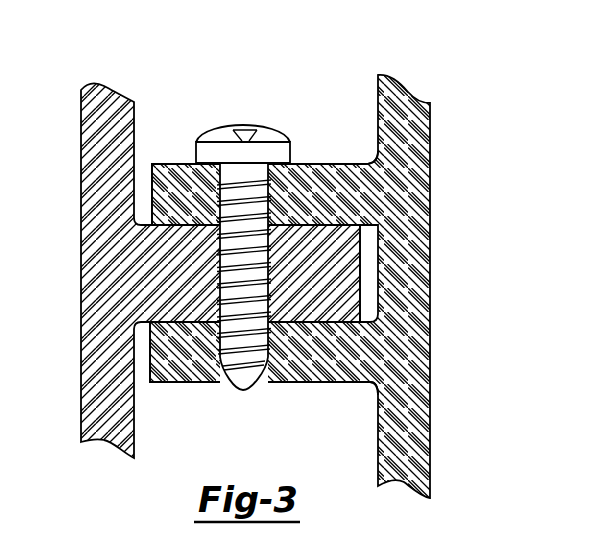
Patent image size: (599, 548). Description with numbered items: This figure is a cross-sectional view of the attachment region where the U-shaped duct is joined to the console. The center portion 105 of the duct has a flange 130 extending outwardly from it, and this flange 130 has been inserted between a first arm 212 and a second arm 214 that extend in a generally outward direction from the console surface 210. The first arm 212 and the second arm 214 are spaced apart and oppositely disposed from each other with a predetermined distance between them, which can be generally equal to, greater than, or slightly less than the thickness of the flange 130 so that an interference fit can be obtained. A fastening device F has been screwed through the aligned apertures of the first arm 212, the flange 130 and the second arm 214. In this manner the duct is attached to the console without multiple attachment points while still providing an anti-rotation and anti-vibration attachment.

The center portion 105 is at (134, 125).
The flange 130 is at (362, 270).
The console surface 210 is at (378, 113).
The first arm 212 is at (327, 163).
The second arm 214 is at (277, 383).
The fastening device F is at (259, 116).